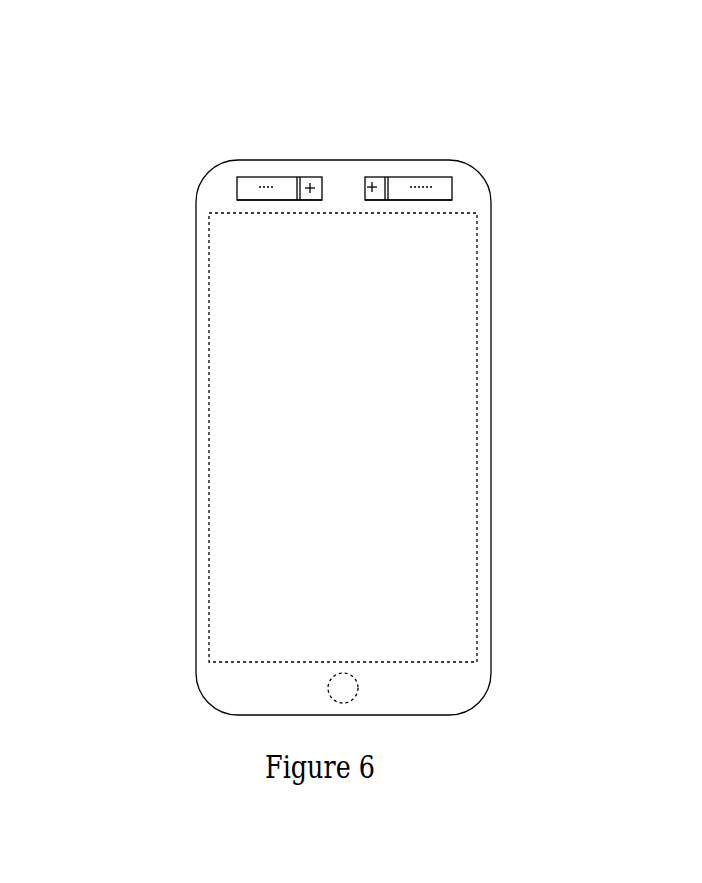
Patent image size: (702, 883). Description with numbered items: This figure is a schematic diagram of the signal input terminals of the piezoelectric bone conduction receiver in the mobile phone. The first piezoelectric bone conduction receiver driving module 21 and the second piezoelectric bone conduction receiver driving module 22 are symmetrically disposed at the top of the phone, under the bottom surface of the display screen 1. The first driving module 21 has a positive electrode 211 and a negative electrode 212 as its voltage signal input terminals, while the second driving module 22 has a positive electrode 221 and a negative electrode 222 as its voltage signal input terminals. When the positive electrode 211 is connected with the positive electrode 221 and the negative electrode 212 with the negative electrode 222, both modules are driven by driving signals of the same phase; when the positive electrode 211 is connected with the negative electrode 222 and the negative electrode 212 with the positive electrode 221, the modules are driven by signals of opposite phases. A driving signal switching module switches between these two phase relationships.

The display screen 1 is at (317, 402).
The first piezoelectric bone conduction receiver driving module 21 is at (420, 178).
The positive electrode 211 is at (370, 178).
The negative electrode 212 is at (452, 188).
The second piezoelectric bone conduction receiver driving module 22 is at (275, 177).
The positive electrode 221 is at (310, 177).
The negative electrode 222 is at (237, 188).